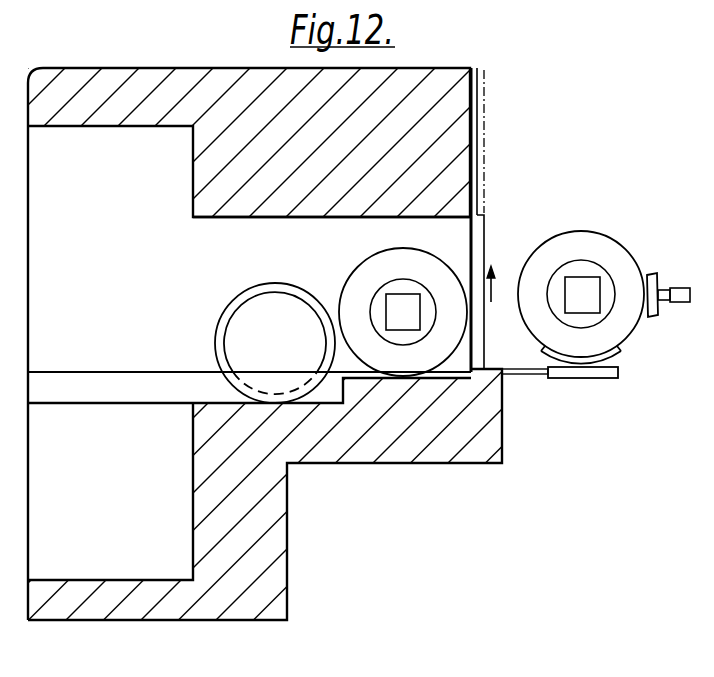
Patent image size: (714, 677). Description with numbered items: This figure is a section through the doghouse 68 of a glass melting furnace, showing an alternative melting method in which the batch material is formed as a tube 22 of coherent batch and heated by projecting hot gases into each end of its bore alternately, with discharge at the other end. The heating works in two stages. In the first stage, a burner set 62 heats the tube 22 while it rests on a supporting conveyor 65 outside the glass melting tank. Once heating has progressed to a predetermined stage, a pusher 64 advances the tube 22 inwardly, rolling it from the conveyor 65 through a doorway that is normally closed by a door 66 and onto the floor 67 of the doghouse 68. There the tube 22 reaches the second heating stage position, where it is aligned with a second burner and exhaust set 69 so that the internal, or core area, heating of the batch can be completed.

The tube of coherent batch material 22 is at (357, 296).
The burner set 62 is at (590, 305).
The pusher 64 is at (660, 277).
The supporting conveyor 65 is at (564, 371).
The door 66 is at (480, 248).
The floor 67 is at (427, 380).
The doghouse 68 is at (423, 240).
The second burner and exhaust set 69 is at (397, 302).